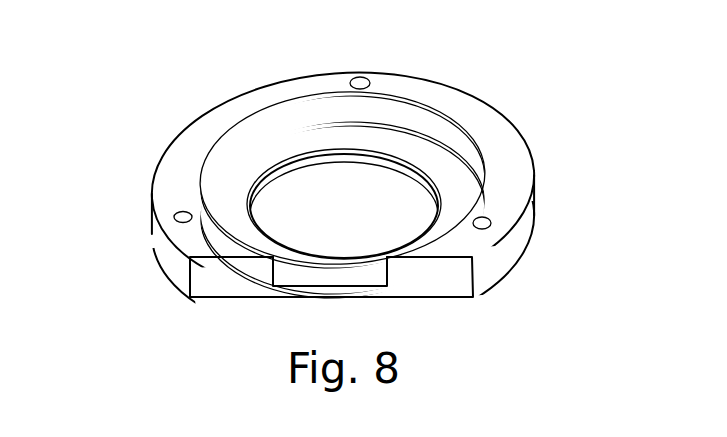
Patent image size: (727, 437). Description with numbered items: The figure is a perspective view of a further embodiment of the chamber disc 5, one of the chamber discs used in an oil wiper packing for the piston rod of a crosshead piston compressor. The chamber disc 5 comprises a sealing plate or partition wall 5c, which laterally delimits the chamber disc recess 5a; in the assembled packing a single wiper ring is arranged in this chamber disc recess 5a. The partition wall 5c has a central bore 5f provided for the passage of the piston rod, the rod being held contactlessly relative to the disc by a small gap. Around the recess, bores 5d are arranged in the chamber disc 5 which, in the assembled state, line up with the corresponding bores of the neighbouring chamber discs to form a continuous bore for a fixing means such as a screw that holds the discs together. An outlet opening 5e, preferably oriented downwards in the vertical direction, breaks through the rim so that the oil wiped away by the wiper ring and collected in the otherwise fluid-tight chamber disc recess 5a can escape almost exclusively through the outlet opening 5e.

The chamber disc 5 is at (500, 72).
The chamber disc recess 5a is at (453, 188).
The partition wall 5c is at (232, 182).
The bore 5d is at (362, 78).
The outlet opening 5e is at (330, 273).
The bore 5f is at (353, 154).